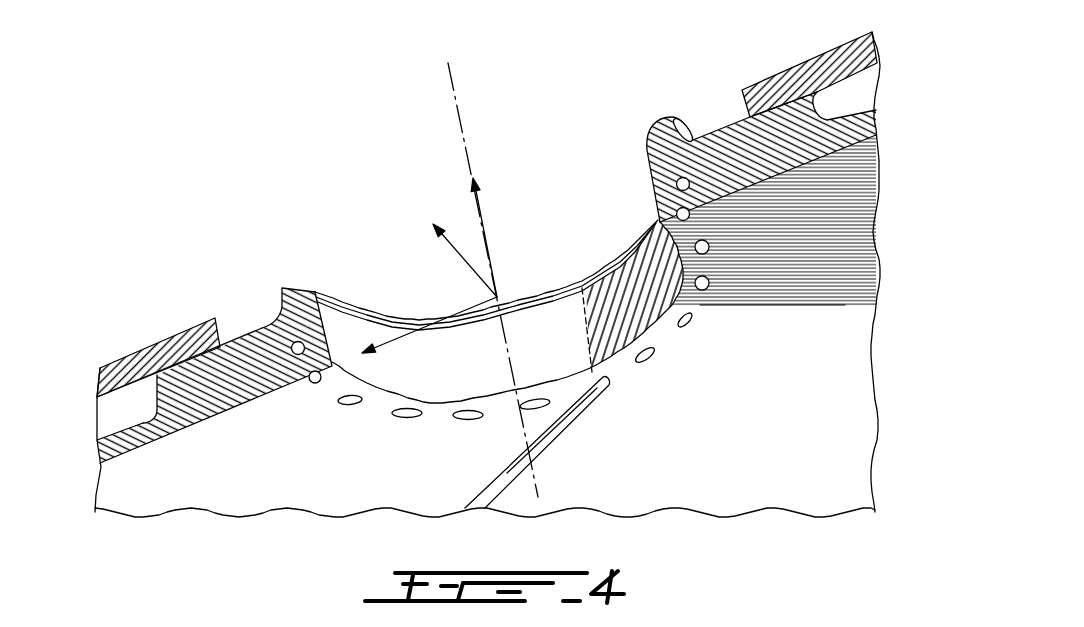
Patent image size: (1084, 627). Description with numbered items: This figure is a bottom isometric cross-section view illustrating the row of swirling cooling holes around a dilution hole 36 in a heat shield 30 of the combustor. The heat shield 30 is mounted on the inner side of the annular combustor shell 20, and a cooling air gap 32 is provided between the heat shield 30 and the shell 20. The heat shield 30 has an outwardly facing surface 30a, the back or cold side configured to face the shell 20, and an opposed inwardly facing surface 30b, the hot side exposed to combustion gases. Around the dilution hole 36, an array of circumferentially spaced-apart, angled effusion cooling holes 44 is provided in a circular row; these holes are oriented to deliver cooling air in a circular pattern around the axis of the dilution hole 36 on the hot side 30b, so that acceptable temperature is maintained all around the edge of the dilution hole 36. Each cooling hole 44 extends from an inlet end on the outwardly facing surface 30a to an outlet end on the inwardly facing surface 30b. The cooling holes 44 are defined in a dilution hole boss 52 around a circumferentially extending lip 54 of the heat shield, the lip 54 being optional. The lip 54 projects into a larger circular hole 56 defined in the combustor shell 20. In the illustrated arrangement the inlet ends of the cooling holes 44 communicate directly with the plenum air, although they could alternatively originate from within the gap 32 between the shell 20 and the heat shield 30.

The annular shell 20 is at (123, 368).
The heat shield 30 is at (783, 157).
The outwardly facing surface 30a is at (125, 432).
The inwardly facing surface 30b is at (803, 227).
The cooling air gap 32 is at (852, 97).
The dilution hole 36 is at (529, 222).
The effusion cooling holes 44 is at (470, 412).
The dilution hole boss 52 is at (252, 370).
The lip 54 is at (307, 290).
The circular hole 56 is at (220, 330).